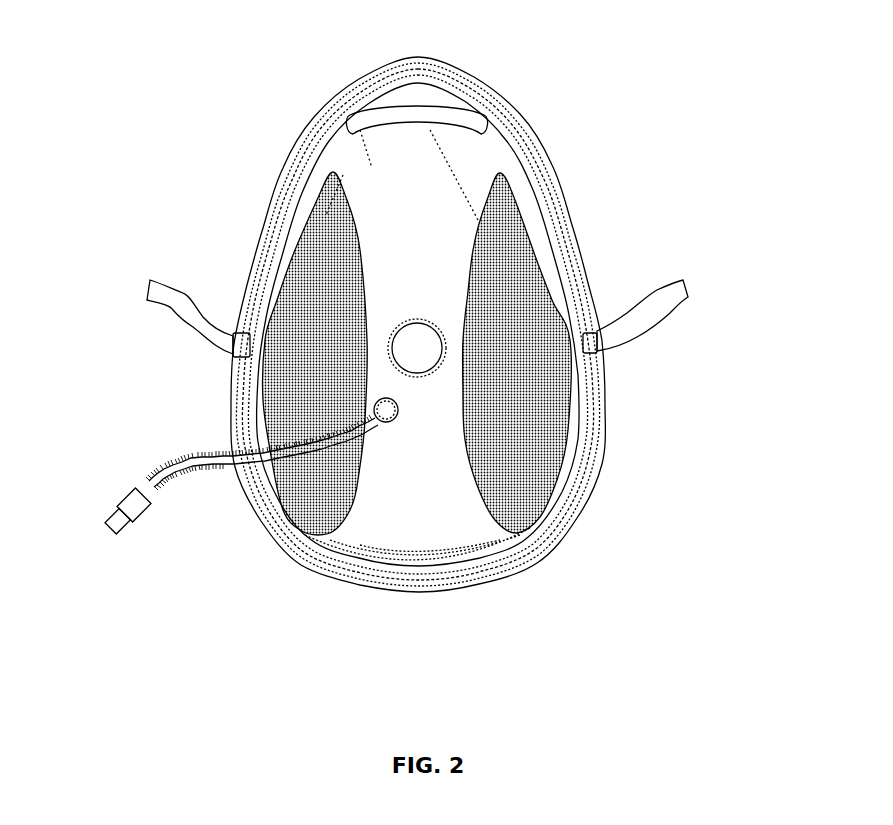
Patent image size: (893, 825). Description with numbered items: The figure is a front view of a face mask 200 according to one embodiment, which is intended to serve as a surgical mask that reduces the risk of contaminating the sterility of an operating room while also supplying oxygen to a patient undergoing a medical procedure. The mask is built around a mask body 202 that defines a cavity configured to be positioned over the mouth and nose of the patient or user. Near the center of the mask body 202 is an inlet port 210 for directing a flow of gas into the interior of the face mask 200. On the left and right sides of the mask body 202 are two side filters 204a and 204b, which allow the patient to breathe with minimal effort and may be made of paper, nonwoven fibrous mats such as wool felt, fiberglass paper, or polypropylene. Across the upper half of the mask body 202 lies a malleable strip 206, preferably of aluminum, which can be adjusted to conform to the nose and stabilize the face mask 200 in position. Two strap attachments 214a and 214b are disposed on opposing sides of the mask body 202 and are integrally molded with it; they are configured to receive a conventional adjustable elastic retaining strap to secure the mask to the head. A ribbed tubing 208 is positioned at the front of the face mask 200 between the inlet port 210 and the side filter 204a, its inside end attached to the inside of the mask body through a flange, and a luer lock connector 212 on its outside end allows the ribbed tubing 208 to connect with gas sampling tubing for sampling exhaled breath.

The face mask 200 is at (662, 516).
The mask body 202 is at (413, 503).
The side filter 204a is at (303, 283).
The side filter 204b is at (523, 283).
The malleable strip 206 is at (403, 97).
The ribbed tubing 208 is at (220, 457).
The inlet port 210 is at (418, 374).
The luer lock connector 212 is at (130, 508).
The strap attachment 214a is at (168, 306).
The strap attachment 214b is at (642, 312).